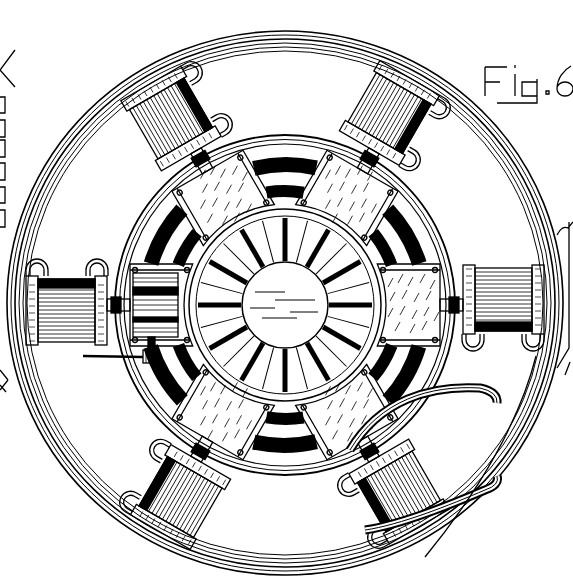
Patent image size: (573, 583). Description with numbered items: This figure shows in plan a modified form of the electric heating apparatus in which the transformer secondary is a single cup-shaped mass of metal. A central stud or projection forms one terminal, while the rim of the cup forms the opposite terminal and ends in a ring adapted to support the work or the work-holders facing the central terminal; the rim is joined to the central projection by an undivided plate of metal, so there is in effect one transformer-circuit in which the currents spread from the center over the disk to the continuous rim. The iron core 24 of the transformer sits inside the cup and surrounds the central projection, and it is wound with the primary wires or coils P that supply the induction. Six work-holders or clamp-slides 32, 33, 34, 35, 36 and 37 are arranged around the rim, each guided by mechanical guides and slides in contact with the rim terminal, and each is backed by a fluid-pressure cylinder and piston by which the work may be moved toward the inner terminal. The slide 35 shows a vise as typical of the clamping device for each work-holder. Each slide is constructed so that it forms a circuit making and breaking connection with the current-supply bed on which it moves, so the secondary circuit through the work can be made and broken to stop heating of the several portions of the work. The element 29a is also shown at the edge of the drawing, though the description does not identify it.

The iron core 24 is at (283, 470).
The terminal lead 29a is at (566, 356).
The work-holder or clamp-slide 32 is at (458, 252).
The work-holder or clamp-slide 33 is at (416, 400).
The work-holder or clamp-slide 34 is at (150, 423).
The work-holder or clamp-slide 35 is at (120, 267).
The work-holder or clamp-slide 36 is at (123, 97).
The work-holder or clamp-slide 37 is at (428, 195).
The primary wires or coils P is at (515, 200).